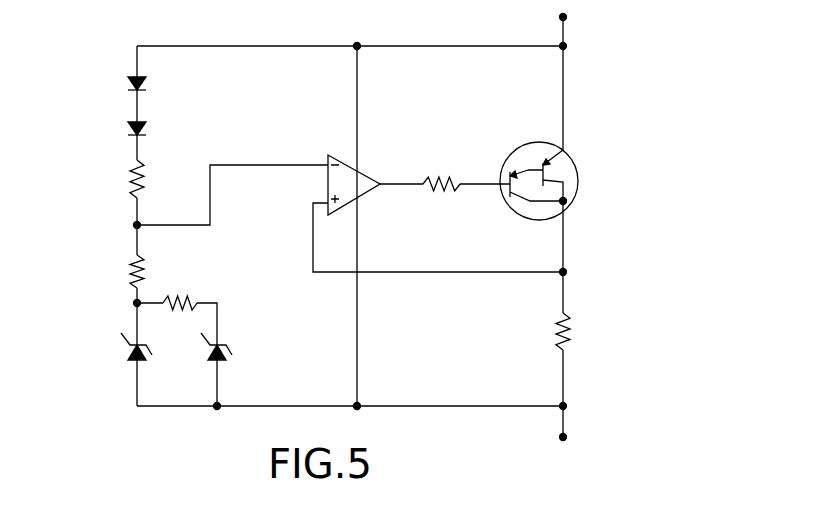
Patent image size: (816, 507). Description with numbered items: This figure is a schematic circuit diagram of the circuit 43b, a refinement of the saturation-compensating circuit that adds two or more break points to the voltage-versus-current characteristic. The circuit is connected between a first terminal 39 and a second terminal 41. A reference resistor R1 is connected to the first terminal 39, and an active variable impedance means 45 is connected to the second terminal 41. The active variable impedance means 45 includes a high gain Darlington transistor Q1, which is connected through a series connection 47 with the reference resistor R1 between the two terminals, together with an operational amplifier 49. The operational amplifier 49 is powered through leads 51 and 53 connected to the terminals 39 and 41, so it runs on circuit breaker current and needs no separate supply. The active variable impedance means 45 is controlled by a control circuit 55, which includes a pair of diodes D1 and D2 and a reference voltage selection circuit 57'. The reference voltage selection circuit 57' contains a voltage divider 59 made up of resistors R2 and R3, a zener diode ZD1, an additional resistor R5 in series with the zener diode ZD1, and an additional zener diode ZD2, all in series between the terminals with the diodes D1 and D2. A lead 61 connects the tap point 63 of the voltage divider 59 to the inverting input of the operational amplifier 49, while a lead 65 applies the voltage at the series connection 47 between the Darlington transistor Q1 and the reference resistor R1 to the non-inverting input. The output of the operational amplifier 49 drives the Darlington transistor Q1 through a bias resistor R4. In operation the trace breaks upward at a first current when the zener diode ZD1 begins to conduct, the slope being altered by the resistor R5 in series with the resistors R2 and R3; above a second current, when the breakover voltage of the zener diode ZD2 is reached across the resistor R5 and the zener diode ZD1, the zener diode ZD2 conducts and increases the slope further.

The circuit 43b is at (334, 28).
The second terminal 41 is at (559, 17).
The active variable impedance means 45 is at (575, 127).
The series connection 47 is at (566, 272).
The operational amplifier 49 is at (363, 172).
The lead 51 is at (358, 353).
The lead 53 is at (358, 112).
The control circuit 55 is at (203, 125).
The reference voltage selection circuit 57' is at (93, 296).
The voltage divider 59 is at (130, 181).
The lead 61 is at (300, 165).
The tap point 63 is at (140, 228).
The lead 65 is at (413, 272).
The first terminal 39 is at (566, 438).
The diode D1 is at (145, 84).
The diode D2 is at (145, 129).
The reference resistor R1 is at (574, 336).
The resistor R2 is at (147, 185).
The resistor R3 is at (145, 260).
The bias resistor R4 is at (430, 177).
The additional resistor R5 is at (190, 299).
The zener diode ZD1 is at (223, 359).
The additional zener diode ZD2 is at (127, 355).
The Darlington transistor Q1 is at (580, 194).